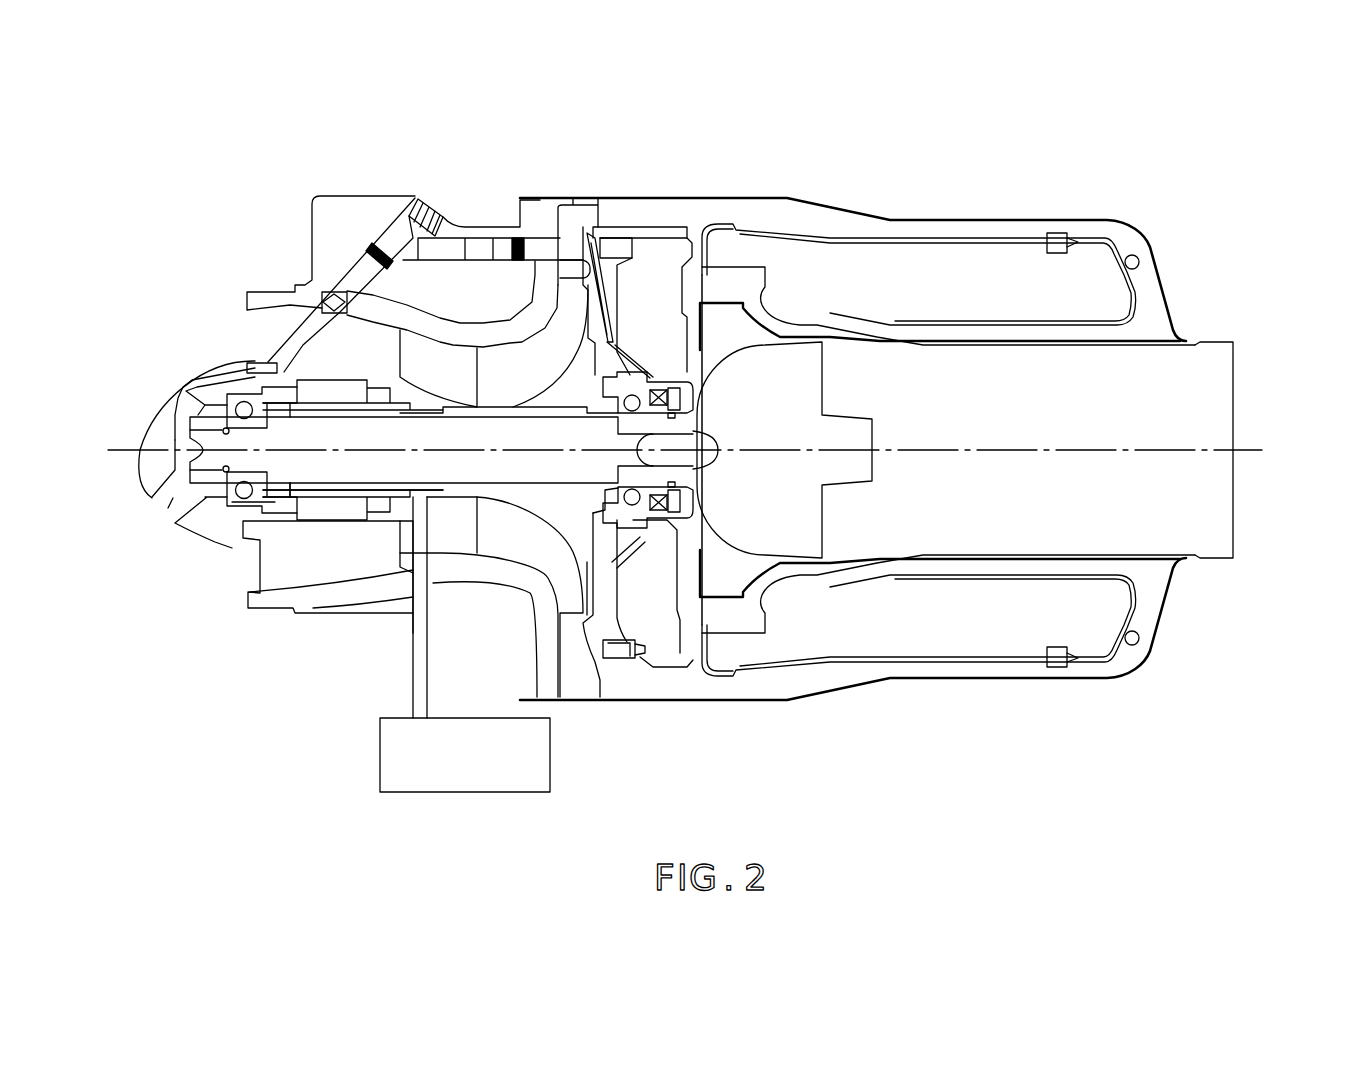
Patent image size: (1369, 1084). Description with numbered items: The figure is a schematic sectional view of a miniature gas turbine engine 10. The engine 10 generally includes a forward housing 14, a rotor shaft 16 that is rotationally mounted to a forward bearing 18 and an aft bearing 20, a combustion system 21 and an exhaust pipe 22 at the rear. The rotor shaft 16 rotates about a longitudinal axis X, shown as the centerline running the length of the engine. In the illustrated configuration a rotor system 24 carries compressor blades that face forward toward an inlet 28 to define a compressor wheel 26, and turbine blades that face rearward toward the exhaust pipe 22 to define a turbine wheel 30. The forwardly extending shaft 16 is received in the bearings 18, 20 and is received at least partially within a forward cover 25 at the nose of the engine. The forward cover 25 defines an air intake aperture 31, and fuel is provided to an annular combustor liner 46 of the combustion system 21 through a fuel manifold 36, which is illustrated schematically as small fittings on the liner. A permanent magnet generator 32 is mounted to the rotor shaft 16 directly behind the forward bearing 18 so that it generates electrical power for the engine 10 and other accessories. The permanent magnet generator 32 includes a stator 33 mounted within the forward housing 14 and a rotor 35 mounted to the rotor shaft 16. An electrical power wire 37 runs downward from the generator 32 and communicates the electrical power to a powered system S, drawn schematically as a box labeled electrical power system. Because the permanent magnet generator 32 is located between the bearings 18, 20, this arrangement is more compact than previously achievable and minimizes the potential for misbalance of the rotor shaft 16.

The miniature gas turbine engine 10 is at (950, 196).
The forward housing 14 is at (313, 613).
The rotor shaft 16 is at (470, 462).
The forward bearing 18 is at (235, 505).
The aft bearing 20 is at (627, 420).
The combustion system 21 is at (1030, 219).
The exhaust pipe 22 is at (1162, 403).
The rotor system 24 is at (503, 525).
The forward cover 25 is at (157, 406).
The compressor wheel 26 is at (590, 513).
The inlet 28 is at (262, 573).
The turbine wheel 30 is at (823, 418).
The air intake aperture 31 is at (173, 497).
The permanent magnet generator 32 is at (330, 373).
The stator 33 is at (315, 513).
The rotor 35 is at (320, 487).
The fuel manifold 36 is at (1057, 230).
The electrical power wire 37 is at (433, 680).
The annular combustor liner 46 is at (985, 292).
The powered system S is at (497, 785).
The longitudinal axis X is at (1263, 451).